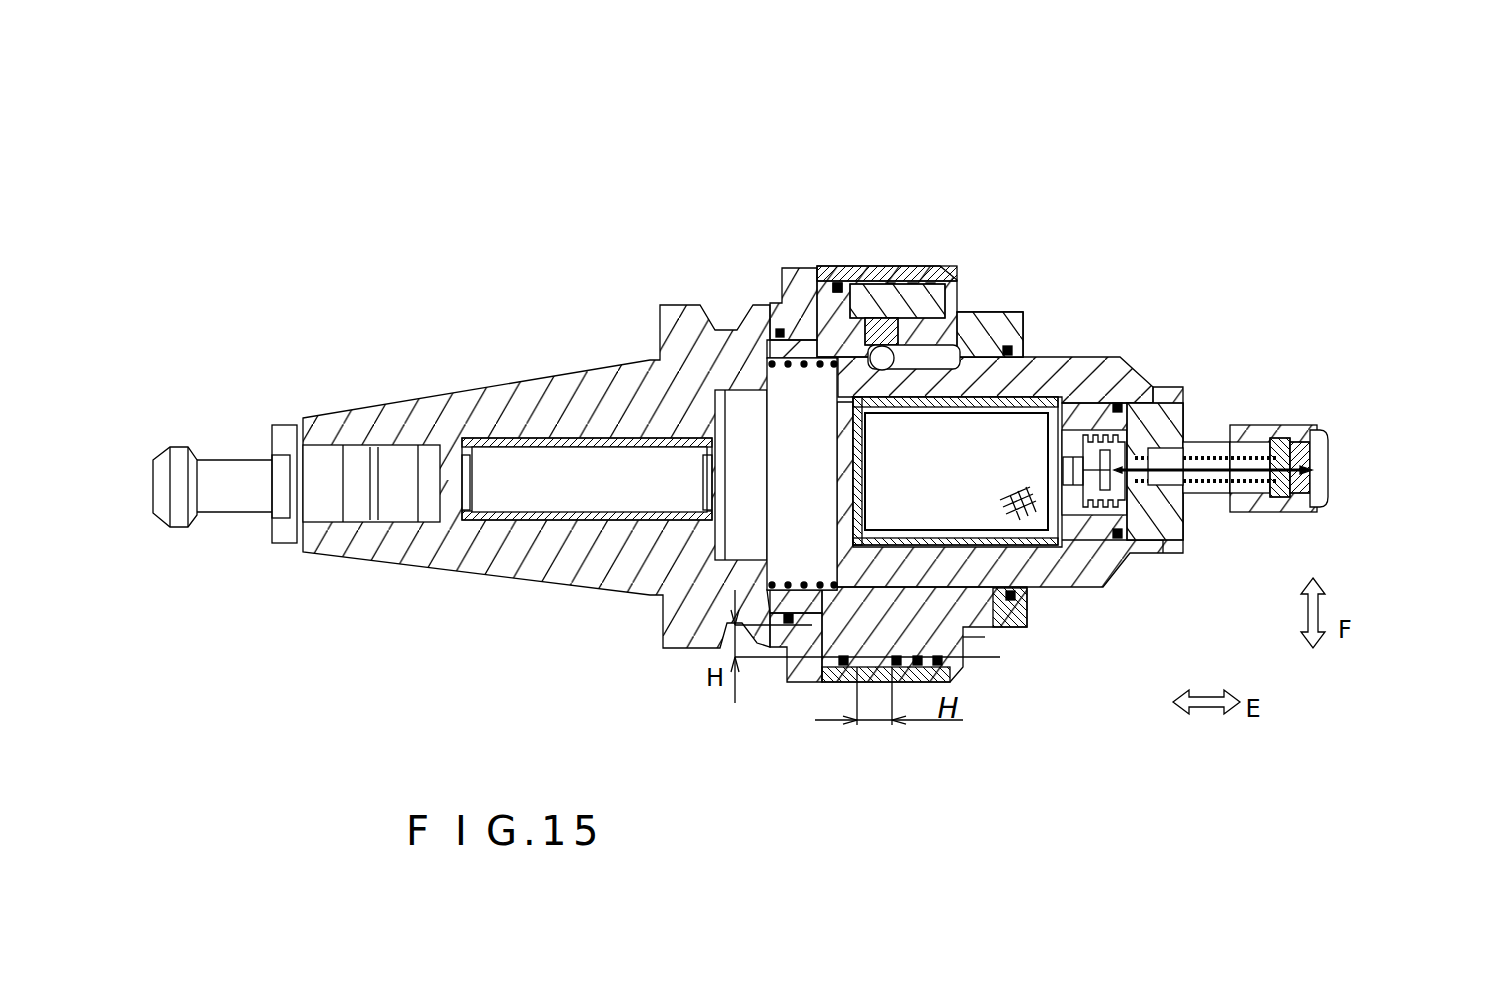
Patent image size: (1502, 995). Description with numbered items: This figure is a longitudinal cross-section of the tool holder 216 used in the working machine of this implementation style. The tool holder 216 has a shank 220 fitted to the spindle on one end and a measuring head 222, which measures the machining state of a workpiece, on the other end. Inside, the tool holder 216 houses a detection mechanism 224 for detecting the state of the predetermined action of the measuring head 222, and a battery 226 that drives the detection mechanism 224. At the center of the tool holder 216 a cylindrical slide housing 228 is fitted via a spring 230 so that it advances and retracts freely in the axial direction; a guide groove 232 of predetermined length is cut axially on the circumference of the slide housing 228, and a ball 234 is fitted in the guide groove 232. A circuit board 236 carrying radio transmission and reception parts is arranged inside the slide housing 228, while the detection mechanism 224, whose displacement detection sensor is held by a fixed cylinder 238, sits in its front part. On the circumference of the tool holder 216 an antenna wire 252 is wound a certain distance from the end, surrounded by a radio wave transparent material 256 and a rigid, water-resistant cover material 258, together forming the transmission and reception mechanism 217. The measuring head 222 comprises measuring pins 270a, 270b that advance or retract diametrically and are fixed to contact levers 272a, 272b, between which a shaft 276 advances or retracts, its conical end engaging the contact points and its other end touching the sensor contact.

The tool holder 216 is at (1073, 284).
The transmission and reception mechanism 217 is at (917, 176).
The shank 220 is at (413, 410).
The measuring head 222 is at (1298, 460).
The detection mechanism 224 is at (1098, 413).
The battery 226 is at (567, 487).
The slide housing 228 is at (1093, 558).
The spring 230 is at (755, 305).
The guide groove 232 is at (940, 362).
The ball 234 is at (818, 287).
The circuit board 236 is at (835, 510).
The fixed cylinder 238 is at (1090, 527).
The antenna wire 252 is at (912, 266).
The radio wave transparent material 256 is at (866, 285).
The cover material 258 is at (927, 266).
The measuring pin 270a is at (1308, 430).
The measuring pin 270b is at (1317, 513).
The contact lever 272a is at (1250, 440).
The contact lever 272b is at (1230, 505).
The shaft 276 is at (1187, 443).